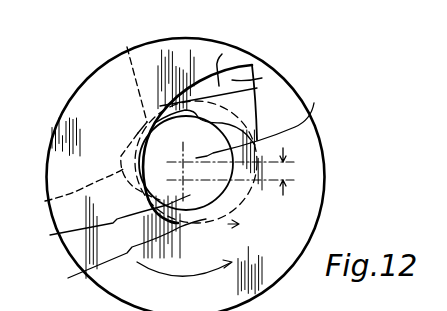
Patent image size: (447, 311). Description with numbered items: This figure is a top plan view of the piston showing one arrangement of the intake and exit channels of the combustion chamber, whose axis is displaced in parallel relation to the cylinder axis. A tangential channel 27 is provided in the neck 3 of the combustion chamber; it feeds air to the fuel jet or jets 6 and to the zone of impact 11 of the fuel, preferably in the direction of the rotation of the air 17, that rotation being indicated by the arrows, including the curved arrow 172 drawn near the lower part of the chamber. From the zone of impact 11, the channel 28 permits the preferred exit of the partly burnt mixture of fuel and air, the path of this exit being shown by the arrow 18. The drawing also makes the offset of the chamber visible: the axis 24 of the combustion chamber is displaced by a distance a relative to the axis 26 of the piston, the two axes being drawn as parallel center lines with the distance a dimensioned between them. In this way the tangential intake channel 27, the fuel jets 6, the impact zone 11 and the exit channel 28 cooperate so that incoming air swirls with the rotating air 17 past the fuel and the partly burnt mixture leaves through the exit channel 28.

The neck 3 is at (142, 146).
The fuel jet 6 is at (136, 114).
The zone of impact 11 is at (45, 201).
The rotation of the air 17 is at (222, 54).
The direction of rotation 172 is at (184, 265).
The arrow 18 is at (226, 219).
The axis of the combustion chamber 24 is at (264, 121).
The axis of the piston 26 is at (106, 225).
The tangential channel 27 is at (262, 78).
The channel 28 is at (122, 257).
The distance a is at (281, 171).